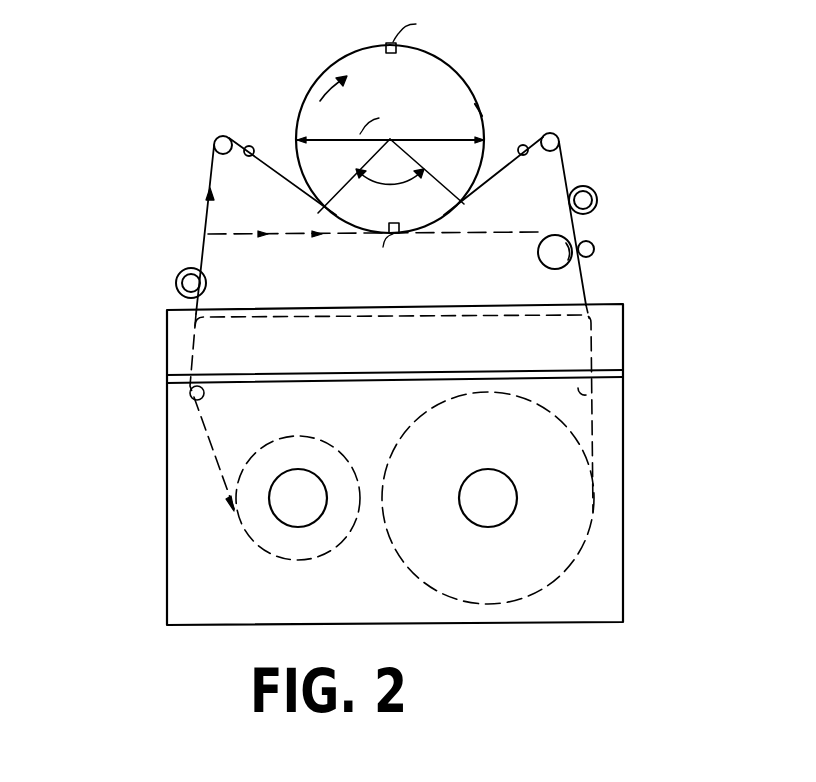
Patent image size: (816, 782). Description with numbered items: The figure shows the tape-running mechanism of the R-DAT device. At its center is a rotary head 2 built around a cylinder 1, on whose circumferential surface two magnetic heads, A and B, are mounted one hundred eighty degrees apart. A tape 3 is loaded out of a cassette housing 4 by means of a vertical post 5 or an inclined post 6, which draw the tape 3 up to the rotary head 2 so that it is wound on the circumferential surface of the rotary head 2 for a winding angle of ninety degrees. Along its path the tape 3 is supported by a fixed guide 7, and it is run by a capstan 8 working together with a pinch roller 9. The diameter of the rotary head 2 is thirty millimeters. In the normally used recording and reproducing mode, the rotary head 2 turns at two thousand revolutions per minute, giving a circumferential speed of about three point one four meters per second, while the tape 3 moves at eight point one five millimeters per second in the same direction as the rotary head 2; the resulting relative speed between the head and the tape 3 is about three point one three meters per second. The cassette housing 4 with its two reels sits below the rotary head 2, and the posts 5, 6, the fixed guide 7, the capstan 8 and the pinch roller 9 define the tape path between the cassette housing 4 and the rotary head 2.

The cylinder 1 is at (463, 76).
The rotary head 2 is at (486, 107).
The tape 3 is at (570, 172).
The cassette housing 4 is at (624, 528).
The vertical post 5 is at (230, 137).
The inclined post 6 is at (250, 157).
The fixed guide 7 is at (177, 279).
The capstan 8 is at (594, 253).
The pinch roller 9 is at (558, 267).